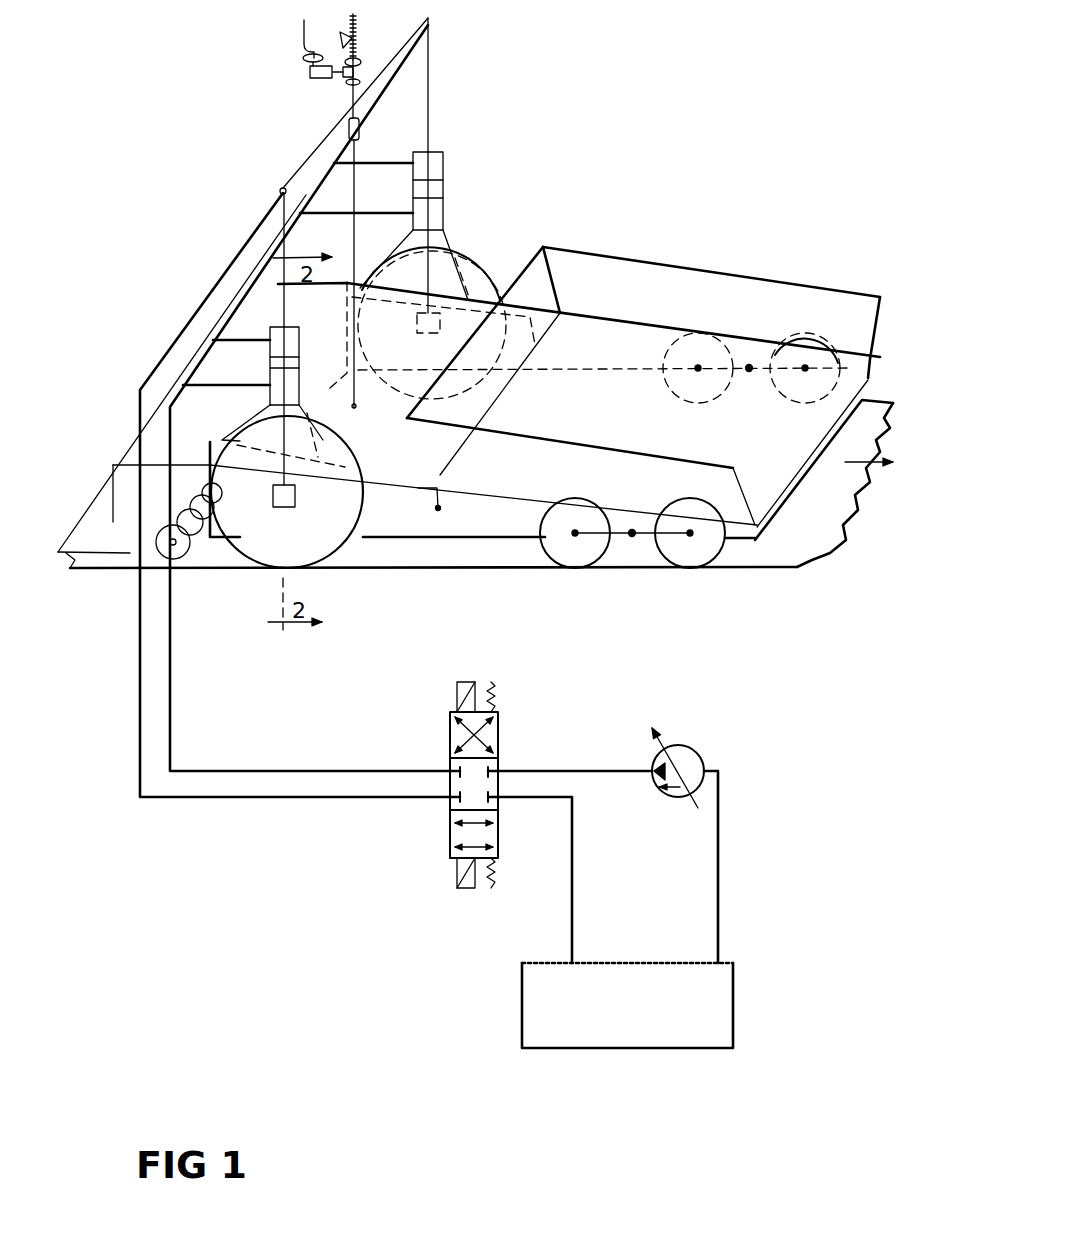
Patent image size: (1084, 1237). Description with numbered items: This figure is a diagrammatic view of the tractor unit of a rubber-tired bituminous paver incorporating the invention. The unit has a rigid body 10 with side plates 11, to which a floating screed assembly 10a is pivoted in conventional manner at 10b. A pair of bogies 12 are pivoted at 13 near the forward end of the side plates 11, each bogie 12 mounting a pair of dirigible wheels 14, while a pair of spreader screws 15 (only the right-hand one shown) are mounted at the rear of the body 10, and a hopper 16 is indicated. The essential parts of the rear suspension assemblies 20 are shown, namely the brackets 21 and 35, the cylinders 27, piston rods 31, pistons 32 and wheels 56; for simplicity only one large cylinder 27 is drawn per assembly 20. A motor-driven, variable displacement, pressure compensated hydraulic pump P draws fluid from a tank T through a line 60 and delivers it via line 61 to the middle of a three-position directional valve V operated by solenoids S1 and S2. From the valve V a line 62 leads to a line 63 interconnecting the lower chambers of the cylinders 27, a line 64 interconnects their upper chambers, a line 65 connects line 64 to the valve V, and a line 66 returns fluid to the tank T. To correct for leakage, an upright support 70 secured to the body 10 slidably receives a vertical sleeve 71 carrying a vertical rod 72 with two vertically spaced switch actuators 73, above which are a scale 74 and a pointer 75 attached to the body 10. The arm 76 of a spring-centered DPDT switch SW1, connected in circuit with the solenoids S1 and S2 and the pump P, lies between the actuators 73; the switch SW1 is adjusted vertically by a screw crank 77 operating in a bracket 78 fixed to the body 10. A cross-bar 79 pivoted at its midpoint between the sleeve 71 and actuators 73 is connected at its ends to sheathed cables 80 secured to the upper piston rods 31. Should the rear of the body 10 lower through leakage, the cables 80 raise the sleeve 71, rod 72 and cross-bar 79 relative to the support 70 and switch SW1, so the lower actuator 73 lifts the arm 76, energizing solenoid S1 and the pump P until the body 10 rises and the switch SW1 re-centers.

The rigid body 10 is at (740, 258).
The floating screed assembly 10a is at (96, 517).
The screed pivot 10b is at (392, 300).
The side plates 11 is at (600, 313).
The bogies 12 is at (755, 380).
The bogie pivot 13 is at (760, 345).
The dirigible wheels 14 is at (697, 347).
The spreader screws 15 is at (215, 518).
The hopper 16 is at (578, 422).
The rear suspension assemblies 20 is at (562, 243).
The bracket 21 is at (448, 233).
The hydraulic cylinders 27 is at (415, 173).
The piston rods 31 is at (445, 167).
The pistons 32 is at (440, 191).
The bracket 35 is at (313, 522).
The wheels 56 is at (477, 262).
The suction line 60 is at (718, 882).
The delivery line 61 is at (562, 771).
The valve-to-cylinder line 62 is at (170, 708).
The lower chamber line 63 is at (393, 215).
The upper chamber line 64 is at (384, 163).
The return connecting line 65 is at (140, 725).
The tank return line 66 is at (573, 877).
The upright support 70 is at (362, 147).
The vertical sleeve 71 is at (360, 125).
The vertical rod 72 is at (349, 94).
The switch actuators 73 is at (357, 80).
The scale 74 is at (358, 26).
The pointer 75 is at (348, 42).
The switch arm 76 is at (340, 78).
The screw crank 77 is at (306, 60).
The bracket 78 is at (300, 44).
The cross-bar 79 is at (314, 152).
The sheathed cables 80 is at (430, 90).
The DPDT switch SW1 is at (320, 78).
The solenoid S1 is at (457, 695).
The solenoid S2 is at (455, 880).
The hydraulic pump P is at (693, 748).
The directional valve V is at (495, 805).
The tank T is at (627, 1005).